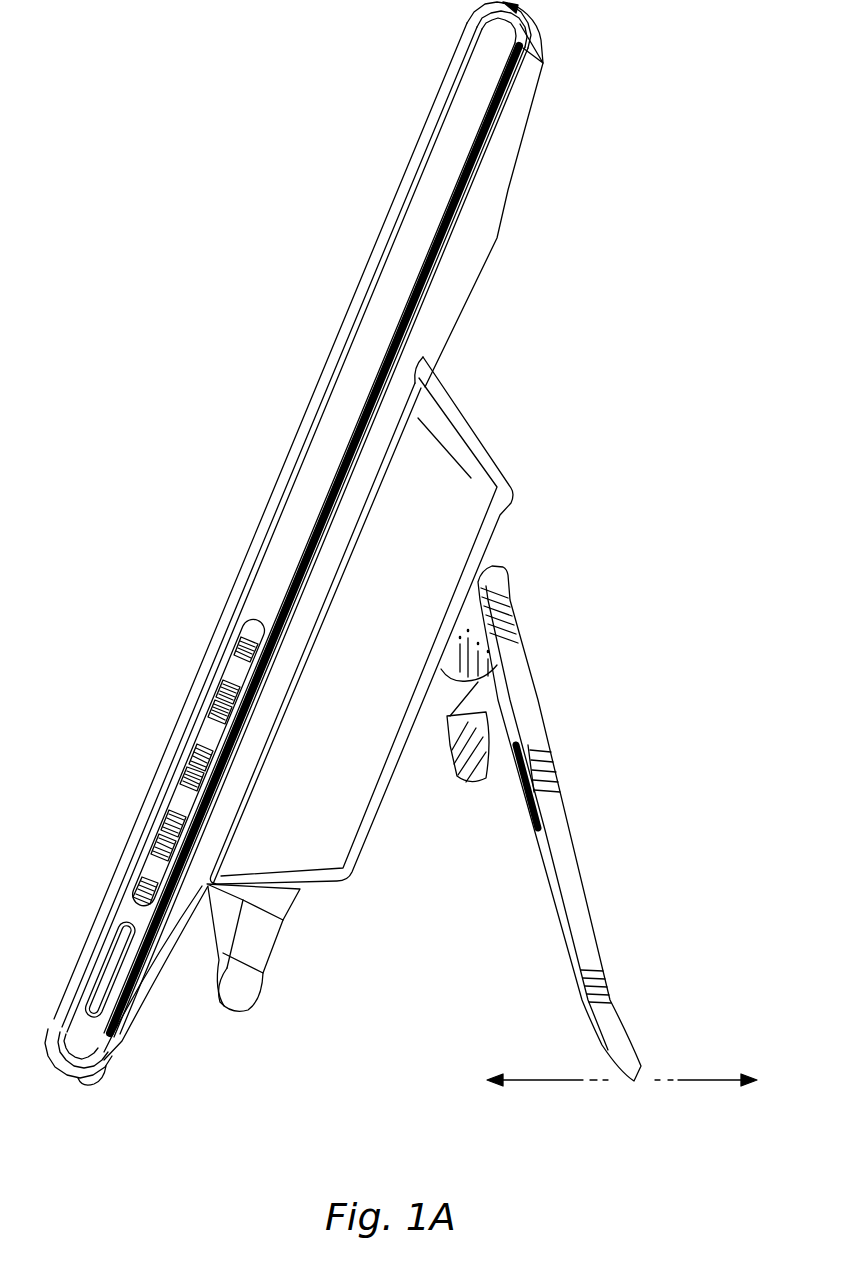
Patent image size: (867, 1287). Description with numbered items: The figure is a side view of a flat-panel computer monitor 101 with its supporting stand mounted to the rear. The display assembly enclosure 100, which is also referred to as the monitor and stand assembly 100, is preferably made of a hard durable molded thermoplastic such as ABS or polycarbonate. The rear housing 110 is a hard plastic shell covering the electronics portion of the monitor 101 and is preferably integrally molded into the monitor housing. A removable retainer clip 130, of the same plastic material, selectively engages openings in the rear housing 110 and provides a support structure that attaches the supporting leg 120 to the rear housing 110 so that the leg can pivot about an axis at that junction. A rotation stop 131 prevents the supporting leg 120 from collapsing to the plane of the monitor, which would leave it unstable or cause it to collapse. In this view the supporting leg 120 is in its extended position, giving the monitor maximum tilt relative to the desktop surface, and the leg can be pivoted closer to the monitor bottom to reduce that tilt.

The display assembly enclosure 100 is at (190, 106).
The flat-panel computer monitor 101 is at (432, 125).
The rear housing 110 is at (488, 447).
The supporting leg 120 is at (568, 783).
The retainer clip 130 is at (387, 813).
The rotation stop 131 is at (553, 747).